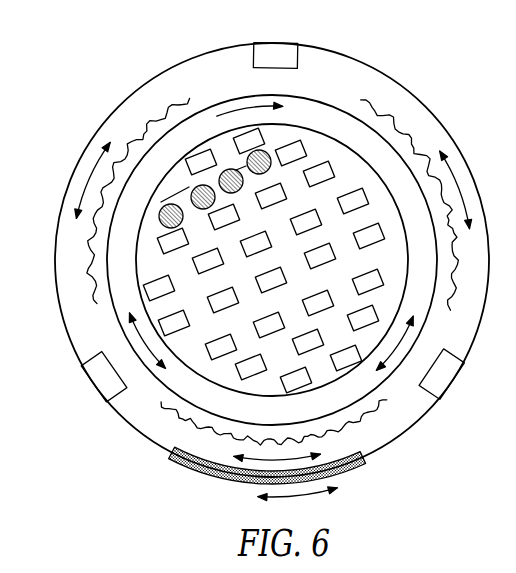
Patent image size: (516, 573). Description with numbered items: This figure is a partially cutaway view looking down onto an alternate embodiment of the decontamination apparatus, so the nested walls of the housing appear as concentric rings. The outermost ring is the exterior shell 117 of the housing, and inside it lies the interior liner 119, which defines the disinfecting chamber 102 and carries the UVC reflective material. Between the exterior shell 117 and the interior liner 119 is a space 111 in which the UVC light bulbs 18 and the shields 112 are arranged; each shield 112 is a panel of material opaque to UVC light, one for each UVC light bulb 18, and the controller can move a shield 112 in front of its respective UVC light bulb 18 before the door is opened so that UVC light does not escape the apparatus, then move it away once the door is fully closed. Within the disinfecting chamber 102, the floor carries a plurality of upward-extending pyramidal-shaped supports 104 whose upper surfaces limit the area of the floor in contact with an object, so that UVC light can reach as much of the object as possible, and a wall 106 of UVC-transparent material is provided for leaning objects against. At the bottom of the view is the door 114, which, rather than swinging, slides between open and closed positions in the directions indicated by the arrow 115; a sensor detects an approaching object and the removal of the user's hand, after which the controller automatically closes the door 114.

The UVC light bulb 18 is at (273, 50).
The disinfecting chamber 102 is at (254, 150).
The pyramidal-shaped support 104 is at (213, 350).
The wall 106 is at (160, 218).
The space 111 is at (335, 72).
The shield 112 is at (127, 147).
The door 114 is at (217, 474).
The arrow 115 is at (325, 492).
The exterior shell 117 is at (57, 298).
The interior liner 119 is at (118, 319).